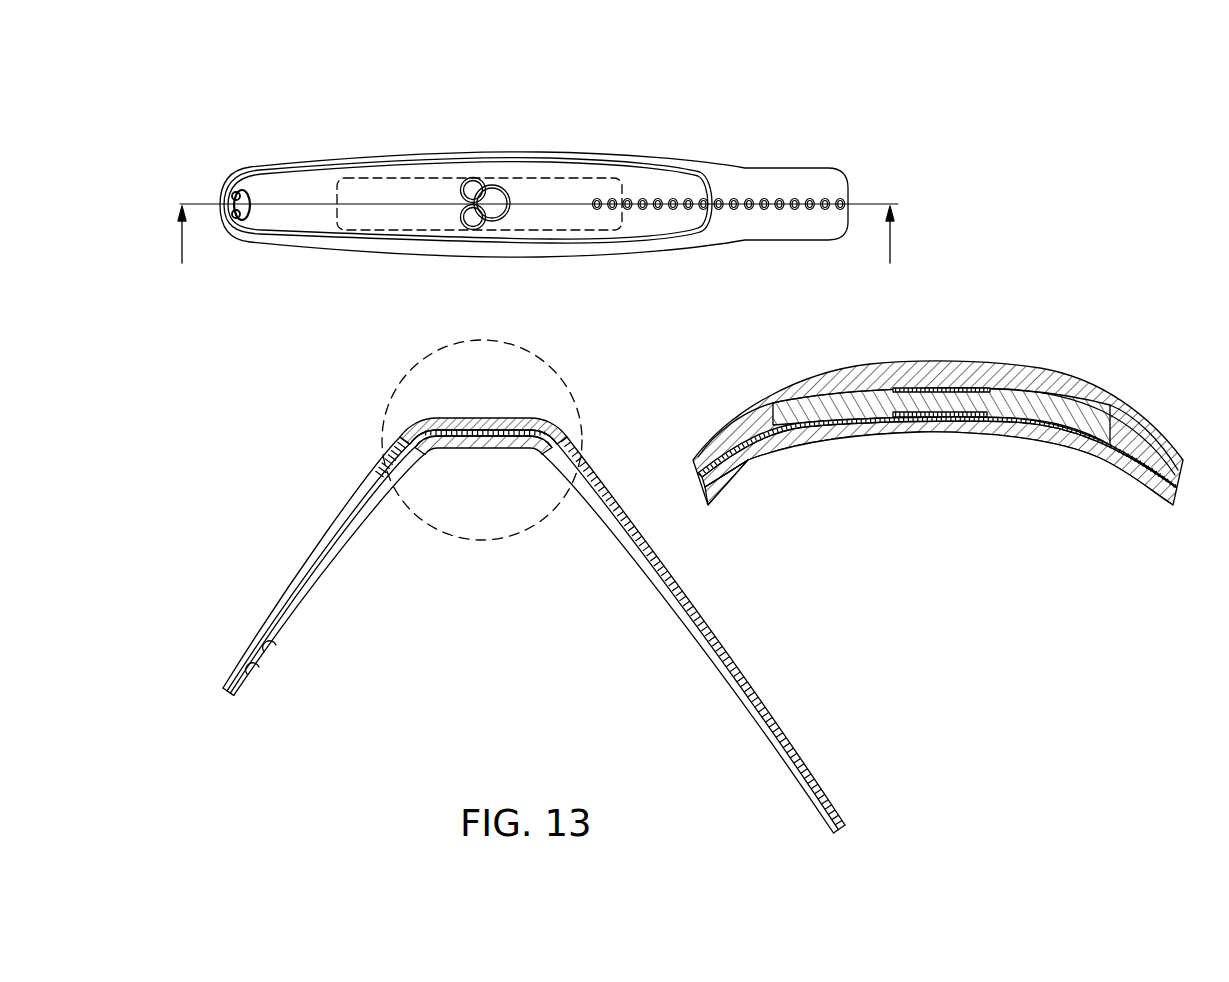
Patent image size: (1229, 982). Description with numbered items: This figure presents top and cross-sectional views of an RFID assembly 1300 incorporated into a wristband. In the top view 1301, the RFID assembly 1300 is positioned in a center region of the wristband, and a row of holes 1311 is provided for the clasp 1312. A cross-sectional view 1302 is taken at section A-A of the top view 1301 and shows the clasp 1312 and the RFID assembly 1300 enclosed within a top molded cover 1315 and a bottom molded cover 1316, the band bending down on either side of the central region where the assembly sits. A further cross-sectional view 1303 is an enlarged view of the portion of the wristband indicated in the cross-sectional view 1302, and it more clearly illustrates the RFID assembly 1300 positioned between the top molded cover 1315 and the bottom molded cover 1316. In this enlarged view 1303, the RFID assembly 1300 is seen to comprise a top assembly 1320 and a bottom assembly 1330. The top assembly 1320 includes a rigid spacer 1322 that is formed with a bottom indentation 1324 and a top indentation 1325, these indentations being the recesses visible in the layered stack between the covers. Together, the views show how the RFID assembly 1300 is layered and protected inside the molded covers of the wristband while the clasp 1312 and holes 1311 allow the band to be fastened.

The RFID assembly 1300 is at (568, 232).
The top view 1301 is at (242, 122).
The cross-sectional view 1302 is at (534, 586).
The cross-sectional view 1303 is at (949, 451).
The holes 1311 is at (735, 197).
The clasp 1312 is at (272, 655).
The top molded cover 1315 is at (404, 440).
The bottom molded cover 1316 is at (379, 492).
The top assembly 1320 is at (803, 392).
The rigid spacer 1322 is at (1142, 422).
The bottom indentation 1324 is at (960, 418).
The top indentation 1325 is at (958, 388).
The bottom assembly 1330 is at (748, 455).